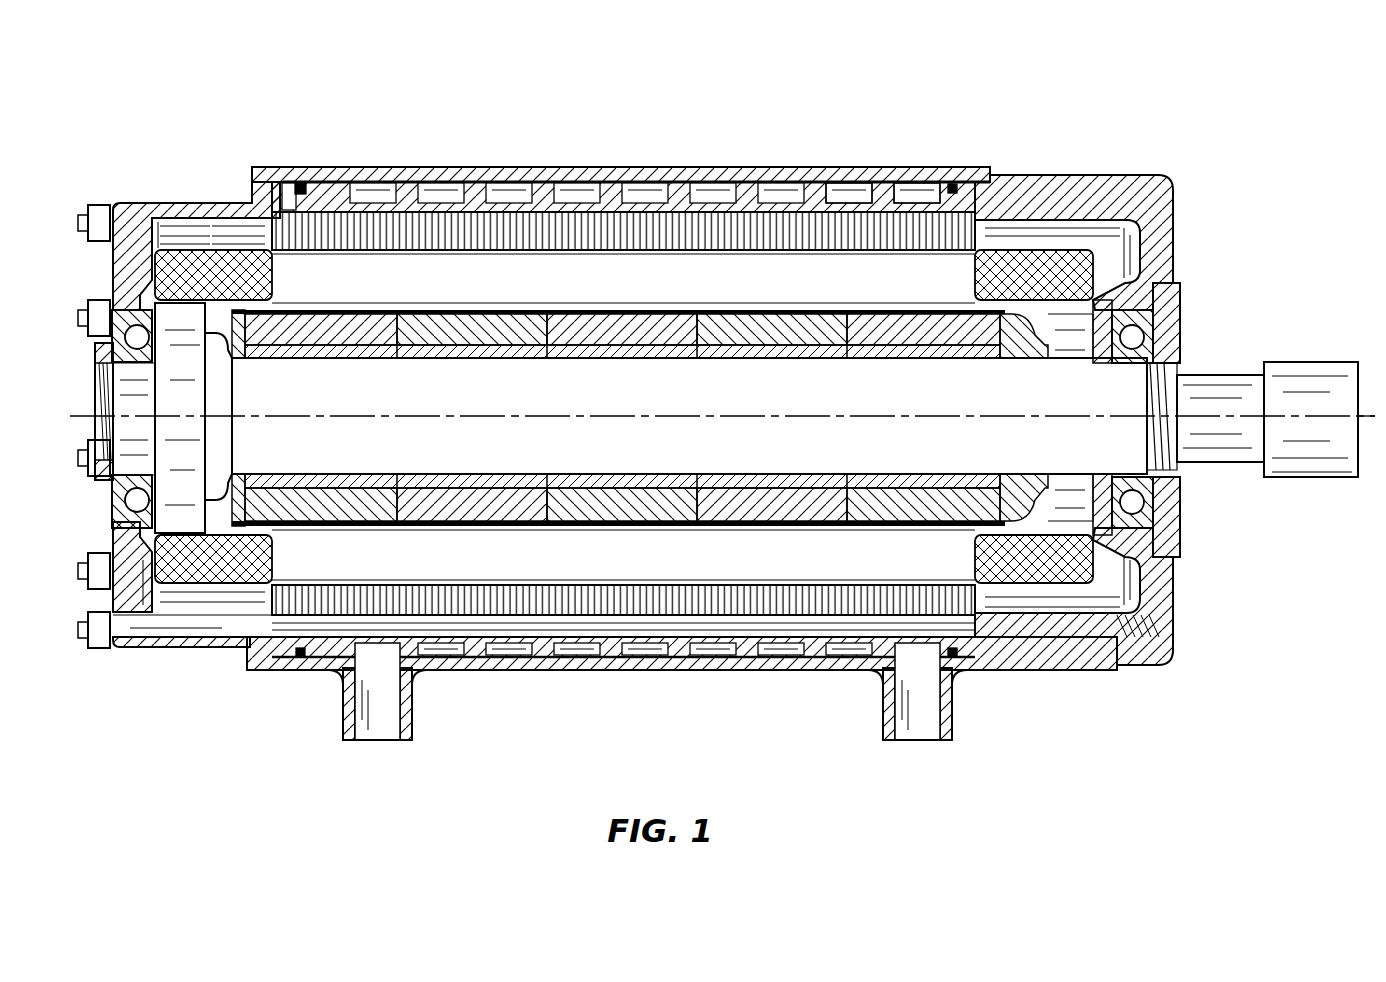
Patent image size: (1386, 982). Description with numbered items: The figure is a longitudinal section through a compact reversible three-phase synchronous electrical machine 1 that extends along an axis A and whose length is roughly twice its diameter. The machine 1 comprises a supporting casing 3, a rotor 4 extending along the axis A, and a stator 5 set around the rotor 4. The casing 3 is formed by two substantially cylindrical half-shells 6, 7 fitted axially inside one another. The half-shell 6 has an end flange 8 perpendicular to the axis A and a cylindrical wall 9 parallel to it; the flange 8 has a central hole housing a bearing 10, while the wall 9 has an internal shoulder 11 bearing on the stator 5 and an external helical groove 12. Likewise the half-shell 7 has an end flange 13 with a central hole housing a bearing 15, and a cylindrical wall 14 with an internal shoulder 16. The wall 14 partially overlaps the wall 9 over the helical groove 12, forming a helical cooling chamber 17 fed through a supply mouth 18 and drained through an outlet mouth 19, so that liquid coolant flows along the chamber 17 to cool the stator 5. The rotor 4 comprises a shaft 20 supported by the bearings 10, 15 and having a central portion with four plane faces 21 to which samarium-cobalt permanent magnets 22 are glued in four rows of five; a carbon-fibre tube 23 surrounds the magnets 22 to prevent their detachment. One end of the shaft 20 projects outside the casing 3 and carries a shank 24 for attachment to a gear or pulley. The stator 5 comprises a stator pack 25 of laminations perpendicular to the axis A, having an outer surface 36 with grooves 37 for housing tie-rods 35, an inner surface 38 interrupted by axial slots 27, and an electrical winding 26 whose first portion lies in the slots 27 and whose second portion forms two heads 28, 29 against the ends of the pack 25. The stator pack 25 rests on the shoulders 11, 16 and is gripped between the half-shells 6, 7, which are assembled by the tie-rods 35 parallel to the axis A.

The electrical machine 1 is at (1196, 210).
The supporting casing 3 is at (1148, 160).
The rotor 4 is at (1052, 335).
The stator 5 is at (1107, 265).
The half-shell 6 is at (1160, 675).
The half-shell 7 is at (263, 690).
The end flange 8 is at (1162, 592).
The cylindrical wall 9 is at (1017, 188).
The bearing 10 is at (1152, 490).
The internal shoulder 11 is at (922, 198).
The external helical groove 12 is at (645, 192).
The end flange 13 is at (118, 285).
The cylindrical wall 14 is at (370, 176).
The bearing 15 is at (130, 340).
The internal shoulder 16 is at (301, 182).
The helical cooling chamber 17 is at (572, 657).
The supply mouth 18 is at (370, 747).
The outlet mouth 19 is at (920, 747).
The shaft 20 is at (1204, 400).
The plane faces 21 is at (316, 352).
The permanent magnets 22 is at (360, 330).
The tube 23 is at (516, 528).
The shank 24 is at (1292, 388).
The stator pack 25 is at (562, 235).
The electrical winding 26 is at (180, 238).
The axial slots 27 is at (530, 278).
The head 28 is at (218, 238).
The head 29 is at (1043, 238).
The tie-rods 35 is at (220, 625).
The outer surface 36 is at (810, 198).
The grooves 37 is at (821, 622).
The inner surface 38 is at (790, 322).
The axis A is at (1366, 416).